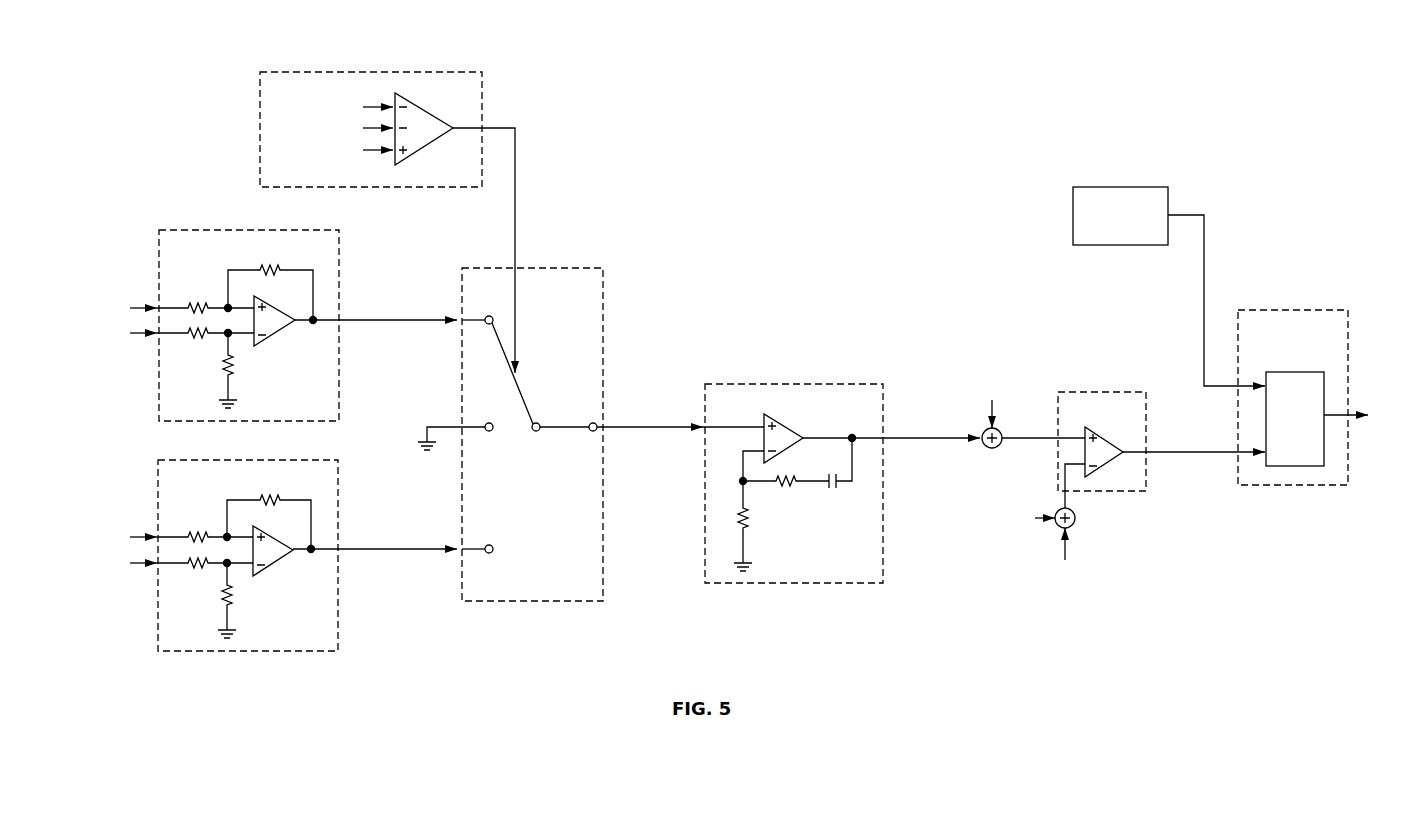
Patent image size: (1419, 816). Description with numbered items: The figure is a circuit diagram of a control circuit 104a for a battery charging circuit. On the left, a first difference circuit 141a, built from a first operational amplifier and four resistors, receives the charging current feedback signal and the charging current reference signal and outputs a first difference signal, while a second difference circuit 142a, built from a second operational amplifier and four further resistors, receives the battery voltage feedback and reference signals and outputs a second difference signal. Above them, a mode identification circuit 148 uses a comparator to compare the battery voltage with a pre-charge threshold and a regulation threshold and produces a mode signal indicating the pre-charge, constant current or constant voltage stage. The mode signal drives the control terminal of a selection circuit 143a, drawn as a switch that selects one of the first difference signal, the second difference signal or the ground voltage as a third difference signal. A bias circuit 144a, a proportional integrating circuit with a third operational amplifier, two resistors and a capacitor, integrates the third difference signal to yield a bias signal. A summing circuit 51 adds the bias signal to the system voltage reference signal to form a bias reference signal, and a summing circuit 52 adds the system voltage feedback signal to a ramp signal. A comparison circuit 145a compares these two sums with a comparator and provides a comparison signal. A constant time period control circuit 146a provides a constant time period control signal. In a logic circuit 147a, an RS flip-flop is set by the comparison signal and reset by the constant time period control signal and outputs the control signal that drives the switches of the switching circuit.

The control circuit 104a is at (1220, 70).
The first difference circuit 141a is at (322, 405).
The second difference circuit 142a is at (315, 637).
The selection circuit 143a is at (578, 581).
The bias circuit 144a is at (859, 568).
The comparison circuit 145a is at (1138, 418).
The constant time period control circuit 146a is at (1143, 225).
The logic circuit 147a is at (1335, 336).
The mode identification circuit 148 is at (467, 171).
The summing circuit 51 is at (985, 446).
The summing circuit 52 is at (1077, 521).